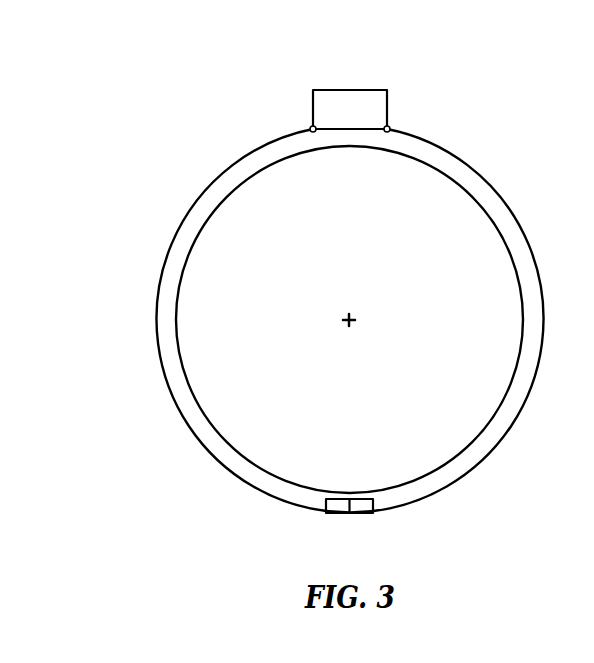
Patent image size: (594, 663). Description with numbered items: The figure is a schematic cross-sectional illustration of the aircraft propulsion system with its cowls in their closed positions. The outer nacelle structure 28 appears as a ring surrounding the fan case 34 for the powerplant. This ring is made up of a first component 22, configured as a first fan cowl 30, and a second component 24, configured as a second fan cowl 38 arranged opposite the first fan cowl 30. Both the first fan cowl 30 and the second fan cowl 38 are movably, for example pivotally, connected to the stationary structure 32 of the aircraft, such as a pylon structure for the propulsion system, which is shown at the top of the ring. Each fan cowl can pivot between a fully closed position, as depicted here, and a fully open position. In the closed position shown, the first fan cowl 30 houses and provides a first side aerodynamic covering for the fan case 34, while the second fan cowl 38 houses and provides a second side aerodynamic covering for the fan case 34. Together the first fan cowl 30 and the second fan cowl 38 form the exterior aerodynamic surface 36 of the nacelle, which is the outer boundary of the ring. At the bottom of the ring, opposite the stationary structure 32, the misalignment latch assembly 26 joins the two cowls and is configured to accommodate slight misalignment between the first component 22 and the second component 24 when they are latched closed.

The first component 22 is at (312, 282).
The first fan cowl 30 is at (234, 146).
The second component 24 is at (312, 295).
The second fan cowl 38 is at (488, 165).
The misalignment latch assembly 26 is at (348, 524).
The outer nacelle structure 28 is at (434, 111).
The stationary structure 32 is at (354, 81).
The fan case 34 is at (504, 234).
The exterior aerodynamic surface 36 is at (157, 329).